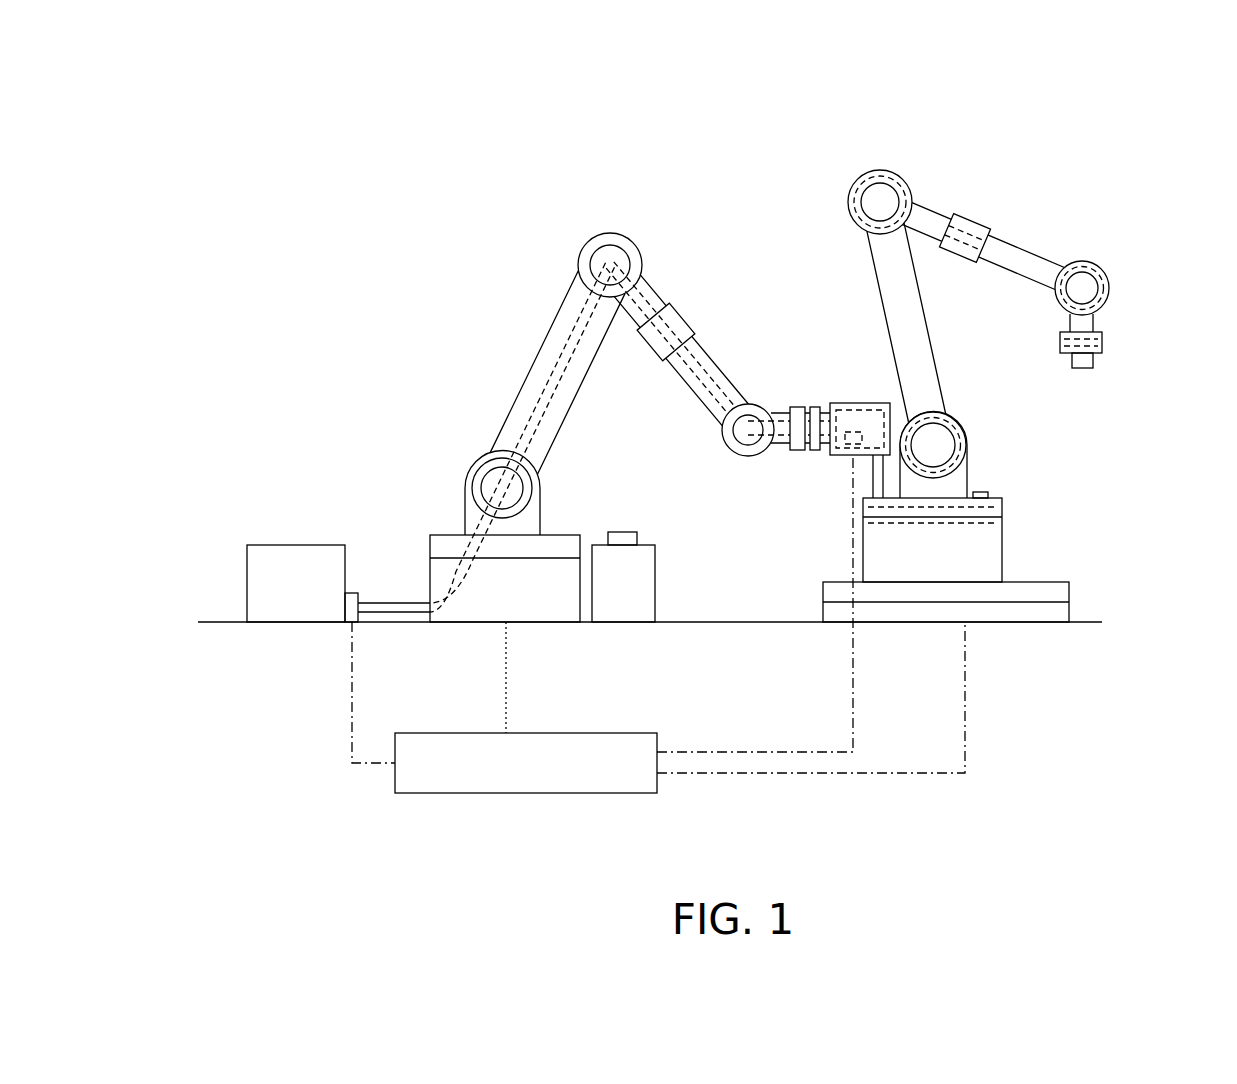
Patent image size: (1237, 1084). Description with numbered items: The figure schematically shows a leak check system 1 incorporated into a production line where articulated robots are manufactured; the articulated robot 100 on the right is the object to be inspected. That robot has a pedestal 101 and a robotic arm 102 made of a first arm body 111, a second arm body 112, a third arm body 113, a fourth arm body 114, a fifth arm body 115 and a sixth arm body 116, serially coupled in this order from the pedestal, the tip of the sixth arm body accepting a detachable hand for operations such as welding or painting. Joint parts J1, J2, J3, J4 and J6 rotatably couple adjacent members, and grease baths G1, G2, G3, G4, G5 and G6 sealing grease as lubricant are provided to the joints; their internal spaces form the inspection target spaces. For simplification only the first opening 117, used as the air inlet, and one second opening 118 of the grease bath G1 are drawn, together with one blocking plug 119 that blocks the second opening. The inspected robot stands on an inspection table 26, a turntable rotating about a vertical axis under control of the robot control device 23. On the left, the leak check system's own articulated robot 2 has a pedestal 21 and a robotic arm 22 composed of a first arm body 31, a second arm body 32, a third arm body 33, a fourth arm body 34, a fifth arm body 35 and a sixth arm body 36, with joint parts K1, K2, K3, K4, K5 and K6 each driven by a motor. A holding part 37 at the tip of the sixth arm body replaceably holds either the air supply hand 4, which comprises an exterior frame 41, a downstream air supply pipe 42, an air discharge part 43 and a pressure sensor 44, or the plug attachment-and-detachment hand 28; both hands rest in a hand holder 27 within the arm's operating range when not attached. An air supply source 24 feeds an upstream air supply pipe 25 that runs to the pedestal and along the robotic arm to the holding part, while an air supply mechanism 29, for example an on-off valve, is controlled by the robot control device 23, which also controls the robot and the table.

The leak check system 1 is at (342, 183).
The articulated robot 2 is at (565, 308).
The air supply hand 4 is at (855, 401).
The pedestal 21 is at (430, 580).
The robotic arm 22 is at (545, 352).
The robot control device 23 is at (523, 793).
The air supply source 24 is at (295, 545).
The upstream air supply pipe 25 is at (552, 403).
The inspection table 26 is at (1070, 592).
The hand holder 27 is at (658, 585).
The plug attachment-and-detachment hand 28 is at (640, 532).
The air supply mechanism 29 is at (352, 593).
The first arm body 31 is at (465, 520).
The second arm body 32 is at (517, 400).
The third arm body 33 is at (650, 283).
The fourth arm body 34 is at (713, 365).
The fifth arm body 35 is at (778, 411).
The sixth arm body 36 is at (808, 407).
The holding part 37 is at (816, 407).
The exterior frame 41 is at (876, 403).
The downstream air supply pipe 42 is at (843, 403).
The air discharge part 43 is at (870, 477).
The pressure sensor 44 is at (823, 452).
The articulated robot 100 is at (1050, 265).
The pedestal 101 is at (1003, 557).
The robotic arm 102 is at (1033, 248).
The first arm body 111 is at (970, 487).
The second arm body 112 is at (942, 352).
The third arm body 113 is at (925, 205).
The fourth arm body 114 is at (1025, 268).
The fifth arm body 115 is at (1095, 322).
The sixth arm body 116 is at (1095, 360).
The first opening 117 is at (862, 505).
The second opening 118 is at (1003, 500).
The blocking plug 119 is at (990, 492).
The joint part K1 is at (567, 530).
The joint part K2 is at (475, 490).
The joint part K3 is at (608, 234).
The joint part K4 is at (690, 318).
The joint part K5 is at (723, 432).
The joint part K6 is at (796, 407).
The joint part J1 is at (1003, 508).
The joint part J2 is at (950, 410).
The joint part J3 is at (855, 190).
The joint part J4 is at (992, 232).
The joint part J6 is at (1103, 336).
The grease bath G1 is at (985, 527).
The grease bath G2 is at (967, 440).
The grease bath G3 is at (880, 168).
The grease bath G4 is at (968, 215).
The grease bath G5 is at (1105, 272).
The grease bath G6 is at (1103, 347).